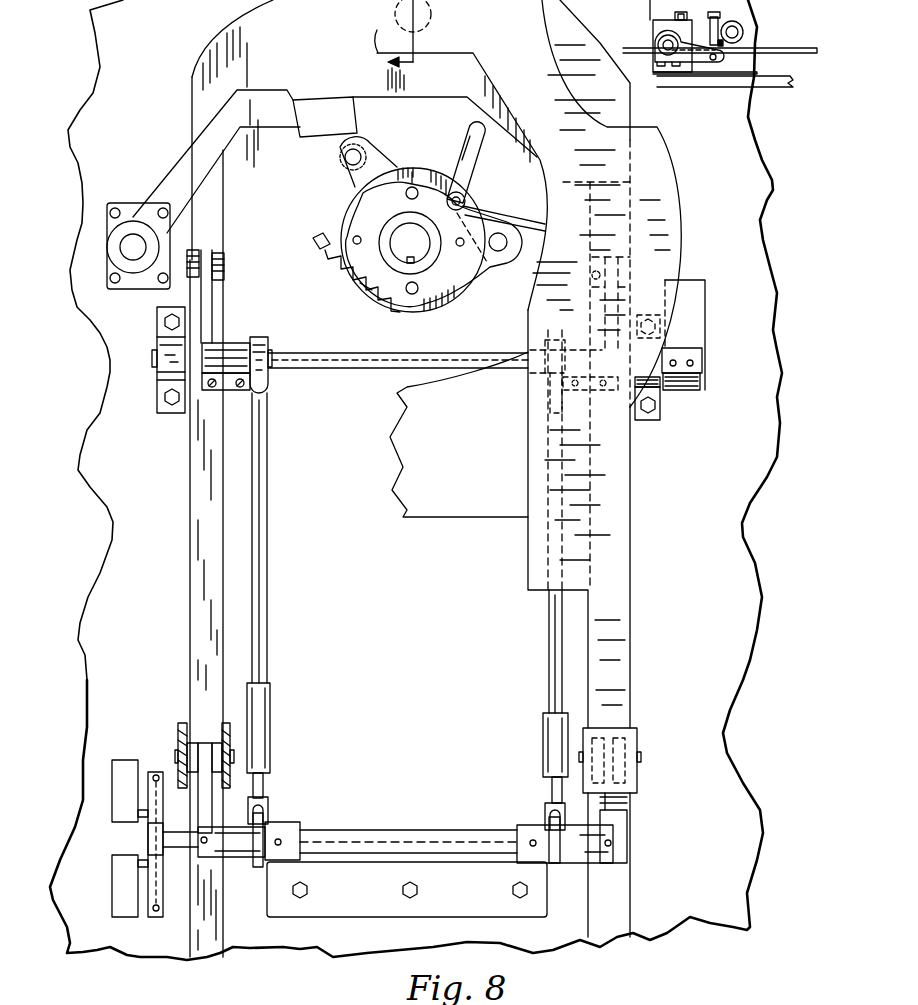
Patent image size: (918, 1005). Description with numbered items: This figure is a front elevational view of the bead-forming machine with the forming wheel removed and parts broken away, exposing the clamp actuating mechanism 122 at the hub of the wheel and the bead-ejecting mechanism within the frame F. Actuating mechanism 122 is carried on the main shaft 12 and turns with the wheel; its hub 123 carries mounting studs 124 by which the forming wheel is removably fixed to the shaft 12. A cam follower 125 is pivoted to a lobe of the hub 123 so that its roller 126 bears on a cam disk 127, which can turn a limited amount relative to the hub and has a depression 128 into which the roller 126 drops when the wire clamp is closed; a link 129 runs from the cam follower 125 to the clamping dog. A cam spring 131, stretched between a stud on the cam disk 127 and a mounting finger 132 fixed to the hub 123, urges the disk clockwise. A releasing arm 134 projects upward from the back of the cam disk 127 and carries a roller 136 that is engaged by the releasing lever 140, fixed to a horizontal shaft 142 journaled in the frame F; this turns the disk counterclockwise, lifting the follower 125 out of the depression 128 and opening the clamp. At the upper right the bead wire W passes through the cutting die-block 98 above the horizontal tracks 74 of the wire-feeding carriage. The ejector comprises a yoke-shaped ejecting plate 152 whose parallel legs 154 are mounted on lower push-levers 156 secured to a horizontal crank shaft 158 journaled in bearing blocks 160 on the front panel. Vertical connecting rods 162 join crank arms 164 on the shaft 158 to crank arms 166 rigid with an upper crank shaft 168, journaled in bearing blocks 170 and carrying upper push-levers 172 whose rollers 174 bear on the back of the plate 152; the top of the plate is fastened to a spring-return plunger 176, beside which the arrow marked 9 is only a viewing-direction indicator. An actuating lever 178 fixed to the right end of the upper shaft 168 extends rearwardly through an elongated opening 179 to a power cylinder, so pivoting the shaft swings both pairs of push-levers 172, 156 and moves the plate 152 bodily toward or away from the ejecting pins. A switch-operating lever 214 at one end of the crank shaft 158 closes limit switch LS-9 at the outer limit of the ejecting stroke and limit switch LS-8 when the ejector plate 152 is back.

The frame F is at (96, 455).
The bead wire W is at (798, 48).
The section line 9 is at (410, 68).
The main shaft 12 is at (427, 247).
The horizontal tracks 74 is at (786, 88).
The cutting die-block 98 is at (655, 27).
The actuating mechanism 122 is at (330, 212).
The hub 123 is at (380, 293).
The mounting studs 124 is at (408, 196).
The cam follower 125 is at (531, 232).
The roller 126 is at (468, 202).
The cam disk 127 is at (414, 175).
The depression 128 is at (478, 213).
The link 129 is at (474, 158).
The cam spring 131 is at (336, 262).
The mounting finger 132 is at (314, 240).
The releasing arm 134 is at (373, 163).
The roller 136 is at (343, 167).
The releasing lever 140 is at (293, 90).
The horizontal shaft 142 is at (128, 247).
The ejecting plate 152 is at (672, 230).
The legs 154 is at (620, 563).
The push-levers 156 is at (207, 805).
The crank shaft 158 is at (382, 832).
The bearing blocks 160 is at (300, 822).
The connecting rods 162 is at (262, 610).
The crank arms 164 is at (257, 866).
The crank arms 166 is at (262, 372).
The upper crank shaft 168 is at (332, 356).
The bearing blocks 170 is at (165, 347).
The upper push-lever 172 is at (205, 328).
The rollers 174 is at (222, 236).
The spring-return plunger 176 is at (432, 20).
The actuating lever 178 is at (704, 388).
The elongated opening 179 is at (703, 318).
The switch-operating lever 214 is at (157, 770).
The limit switch LS-8 is at (118, 783).
The limit switch LS-9 is at (123, 893).